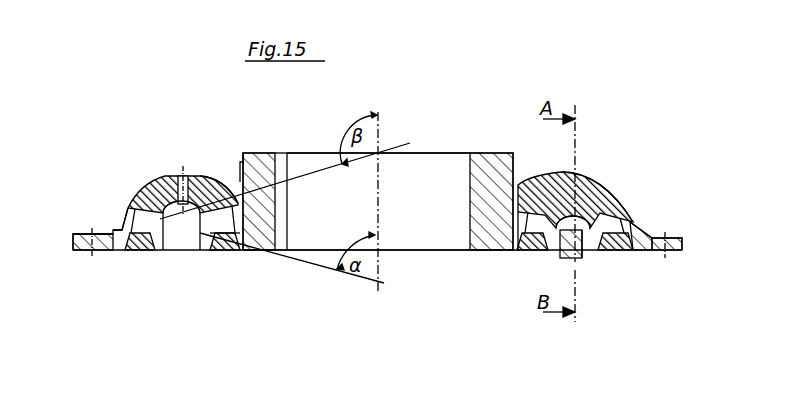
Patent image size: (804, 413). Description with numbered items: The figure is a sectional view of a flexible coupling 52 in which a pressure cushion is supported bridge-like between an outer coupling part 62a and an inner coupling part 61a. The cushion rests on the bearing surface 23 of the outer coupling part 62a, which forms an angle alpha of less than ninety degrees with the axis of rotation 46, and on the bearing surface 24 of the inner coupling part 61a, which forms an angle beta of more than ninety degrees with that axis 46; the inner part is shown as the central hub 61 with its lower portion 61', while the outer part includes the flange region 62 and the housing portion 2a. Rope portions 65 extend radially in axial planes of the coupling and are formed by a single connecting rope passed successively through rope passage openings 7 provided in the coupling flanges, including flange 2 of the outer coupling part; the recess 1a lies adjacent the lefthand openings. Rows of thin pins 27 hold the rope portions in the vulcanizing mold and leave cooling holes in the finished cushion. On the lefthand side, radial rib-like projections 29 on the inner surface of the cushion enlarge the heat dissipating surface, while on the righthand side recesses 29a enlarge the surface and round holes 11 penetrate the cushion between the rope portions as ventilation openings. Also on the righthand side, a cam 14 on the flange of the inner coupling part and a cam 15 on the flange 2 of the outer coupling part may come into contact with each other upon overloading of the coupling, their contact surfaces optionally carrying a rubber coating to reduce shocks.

The recess 1a is at (215, 237).
The flange 2 is at (632, 228).
The housing portion 2a is at (137, 214).
The rope passage openings 7 is at (131, 249).
The round holes 11 is at (597, 183).
The cam 14 is at (561, 257).
The cam 15 is at (581, 257).
The bearing surface 23 is at (146, 184).
The bearing surface 24 is at (224, 179).
The thin pins 27 is at (203, 174).
The radial rib-like projections 29 is at (186, 218).
The recesses 29a is at (557, 178).
The axis of rotation 46 is at (381, 121).
The coupling 52 is at (616, 190).
The hub body 61 is at (361, 153).
The inner coupling part 61a is at (428, 173).
The hub body lower part 61' is at (478, 281).
The flange 62 is at (113, 232).
The outer coupling part 62a is at (80, 251).
The rope portions 65 is at (207, 178).